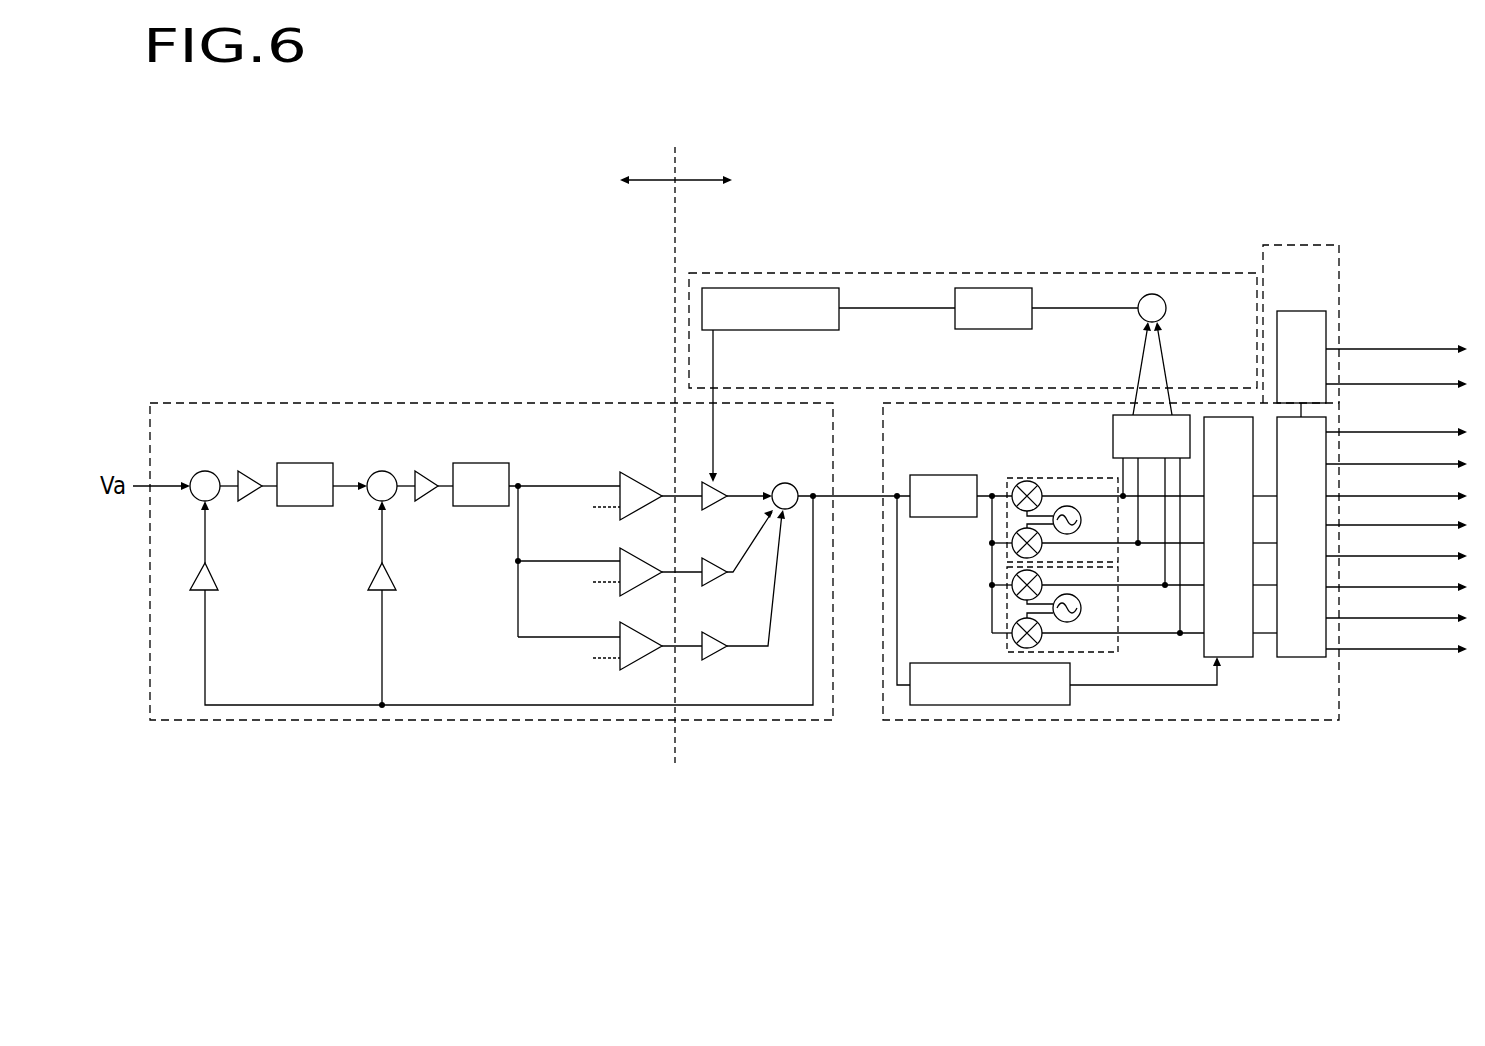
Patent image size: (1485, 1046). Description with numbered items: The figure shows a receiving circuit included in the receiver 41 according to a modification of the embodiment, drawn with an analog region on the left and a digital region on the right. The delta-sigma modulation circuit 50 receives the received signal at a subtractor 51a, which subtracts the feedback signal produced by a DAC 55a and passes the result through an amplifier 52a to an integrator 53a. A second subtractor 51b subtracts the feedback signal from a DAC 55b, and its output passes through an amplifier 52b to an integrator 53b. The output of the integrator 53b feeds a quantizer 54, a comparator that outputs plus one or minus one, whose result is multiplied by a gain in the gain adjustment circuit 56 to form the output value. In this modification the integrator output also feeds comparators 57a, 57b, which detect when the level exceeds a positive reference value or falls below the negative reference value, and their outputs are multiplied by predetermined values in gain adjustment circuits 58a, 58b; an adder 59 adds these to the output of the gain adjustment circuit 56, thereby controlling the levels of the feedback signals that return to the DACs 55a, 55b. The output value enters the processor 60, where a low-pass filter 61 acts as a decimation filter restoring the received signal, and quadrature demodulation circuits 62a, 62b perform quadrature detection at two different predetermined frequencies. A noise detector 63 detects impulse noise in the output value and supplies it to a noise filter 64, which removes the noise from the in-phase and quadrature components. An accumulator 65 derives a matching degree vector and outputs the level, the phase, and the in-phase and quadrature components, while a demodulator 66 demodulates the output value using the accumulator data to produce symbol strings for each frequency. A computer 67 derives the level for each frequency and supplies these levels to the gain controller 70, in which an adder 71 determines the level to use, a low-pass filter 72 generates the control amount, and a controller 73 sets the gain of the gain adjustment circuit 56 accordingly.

The receiver 41 is at (690, 133).
The delta-sigma modulation circuit 50 is at (492, 720).
The subtractor 51a is at (205, 470).
The subtractor 51b is at (382, 470).
The amplifier 52a is at (253, 500).
The amplifier 52b is at (430, 500).
The integrator 53a is at (307, 507).
The integrator 53b is at (484, 507).
The quantizer 54 is at (651, 505).
The DAC 55a is at (212, 592).
The DAC 55b is at (389, 592).
The gain adjustment circuit 56 is at (716, 506).
The comparator 57a is at (653, 582).
The comparator 57b is at (653, 658).
The gain adjustment circuit 58a is at (716, 583).
The gain adjustment circuit 58b is at (716, 658).
The adder 59 is at (785, 481).
The processor 60 is at (1112, 720).
The low-pass filter 61 is at (943, 473).
The quadrature demodulation circuit 62a is at (1019, 476).
The quadrature demodulation circuit 62b is at (1007, 593).
The noise detector 63 is at (940, 661).
The noise filter 64 is at (1243, 659).
The accumulator 65 is at (1301, 659).
The demodulator 66 is at (1301, 309).
The computer 67 is at (1113, 433).
The gain controller 70 is at (970, 272).
The adder 71 is at (1168, 307).
The low-pass filter 72 is at (993, 330).
The controller 73 is at (765, 331).